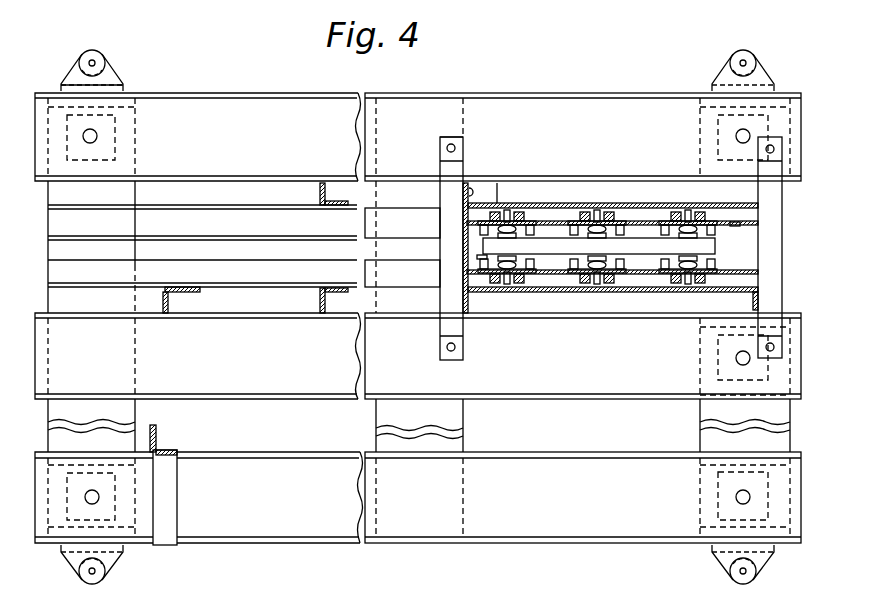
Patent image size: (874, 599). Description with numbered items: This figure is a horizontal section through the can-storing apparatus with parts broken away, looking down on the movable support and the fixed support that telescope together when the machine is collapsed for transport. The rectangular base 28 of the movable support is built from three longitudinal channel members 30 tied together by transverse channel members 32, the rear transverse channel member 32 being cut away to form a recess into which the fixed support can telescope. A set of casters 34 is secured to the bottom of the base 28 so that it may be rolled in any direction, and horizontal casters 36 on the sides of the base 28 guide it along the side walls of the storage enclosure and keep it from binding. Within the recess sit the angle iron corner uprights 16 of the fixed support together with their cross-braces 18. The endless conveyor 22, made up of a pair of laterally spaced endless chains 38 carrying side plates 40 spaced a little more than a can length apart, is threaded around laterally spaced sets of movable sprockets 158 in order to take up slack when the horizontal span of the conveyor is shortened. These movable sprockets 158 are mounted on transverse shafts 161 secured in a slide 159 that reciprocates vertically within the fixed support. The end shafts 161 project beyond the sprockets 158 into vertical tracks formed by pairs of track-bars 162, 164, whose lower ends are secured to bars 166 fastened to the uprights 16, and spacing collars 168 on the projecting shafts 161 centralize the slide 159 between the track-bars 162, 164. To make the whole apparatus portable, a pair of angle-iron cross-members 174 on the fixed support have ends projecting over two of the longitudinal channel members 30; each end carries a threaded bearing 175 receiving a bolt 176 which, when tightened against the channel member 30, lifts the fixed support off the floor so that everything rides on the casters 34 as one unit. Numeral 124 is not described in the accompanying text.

The angle iron corner upright 16 is at (753, 193).
The cross-brace 18 is at (773, 190).
The endless conveyor 22 is at (572, 220).
The rectangular base 28 is at (418, 548).
The longitudinal channel member 30 is at (247, 110).
The transverse channel member 32 is at (127, 413).
The caster 34 is at (97, 136).
The horizontal caster 36 is at (98, 55).
The endless chain 38 is at (732, 268).
The side plate 40 is at (732, 262).
The rail member 124 is at (222, 598).
The movable sprocket 158 is at (507, 218).
The slide 159 is at (493, 250).
The transverse shaft 161 is at (505, 212).
The track-bar 162 is at (488, 212).
The track-bar 164 is at (523, 214).
The bar 166 is at (598, 220).
The spacing collar 168 is at (515, 226).
The angle-iron cross-member 174 is at (448, 327).
The threaded bearing 175 is at (442, 143).
The bolt 176 is at (463, 143).